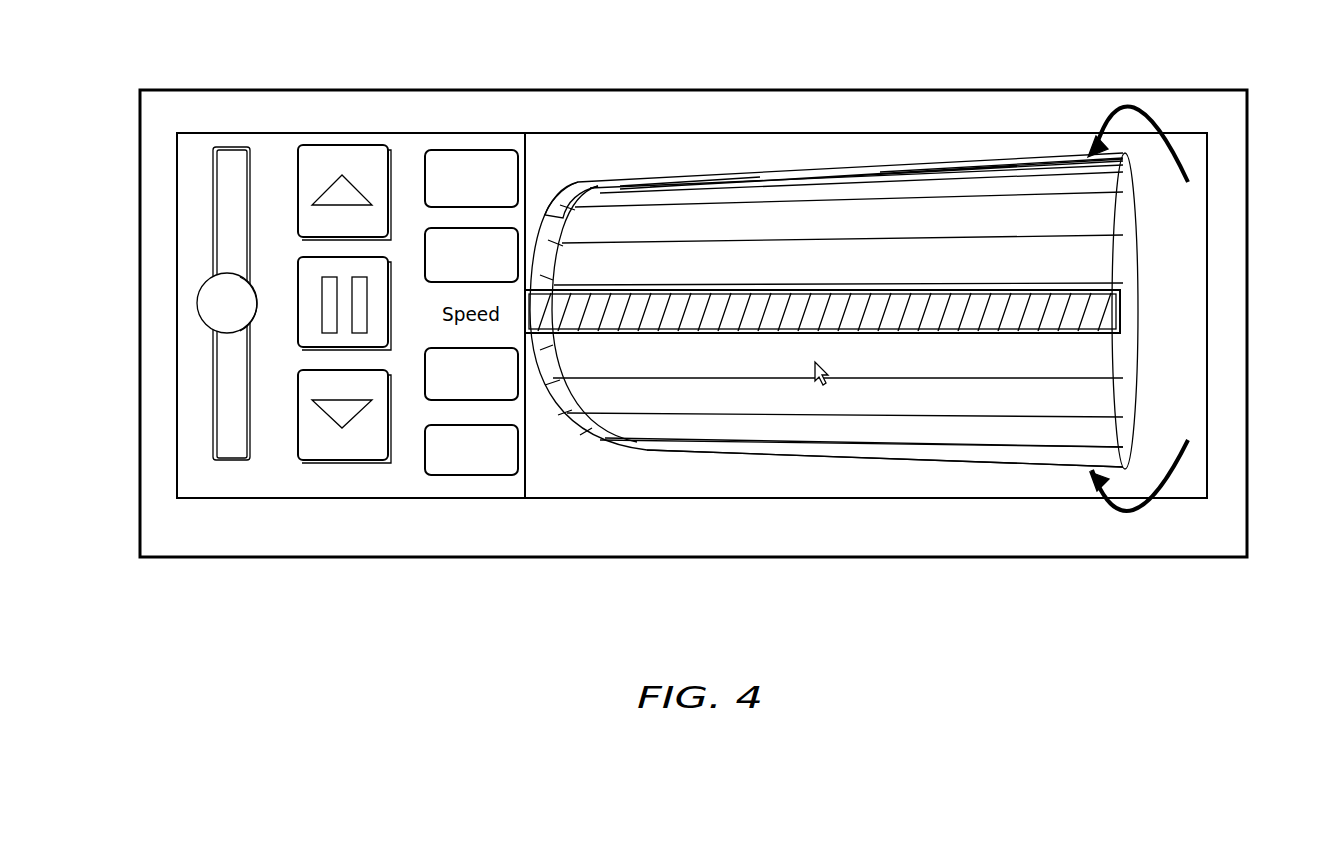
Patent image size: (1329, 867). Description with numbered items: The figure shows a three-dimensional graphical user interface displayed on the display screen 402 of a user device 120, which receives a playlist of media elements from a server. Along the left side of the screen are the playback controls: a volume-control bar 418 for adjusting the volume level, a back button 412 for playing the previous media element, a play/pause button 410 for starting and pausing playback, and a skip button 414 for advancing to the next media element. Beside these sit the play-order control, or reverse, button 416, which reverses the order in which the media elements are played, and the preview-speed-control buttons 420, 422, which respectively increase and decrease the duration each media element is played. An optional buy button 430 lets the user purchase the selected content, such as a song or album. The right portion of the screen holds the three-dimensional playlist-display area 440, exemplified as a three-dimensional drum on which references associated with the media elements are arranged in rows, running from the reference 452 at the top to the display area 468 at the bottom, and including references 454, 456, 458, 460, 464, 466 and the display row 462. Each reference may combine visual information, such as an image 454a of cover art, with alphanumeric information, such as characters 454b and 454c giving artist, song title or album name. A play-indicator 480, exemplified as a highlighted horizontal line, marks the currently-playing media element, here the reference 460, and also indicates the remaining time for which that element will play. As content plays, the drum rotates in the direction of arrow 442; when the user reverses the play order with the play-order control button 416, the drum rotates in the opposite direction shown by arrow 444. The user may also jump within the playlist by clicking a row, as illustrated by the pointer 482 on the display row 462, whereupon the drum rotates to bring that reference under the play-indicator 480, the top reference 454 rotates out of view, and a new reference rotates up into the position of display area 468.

The user device 120 is at (1062, 90).
The display screen 402 is at (882, 133).
The play/pause button 410 is at (305, 333).
The back button 412 is at (335, 158).
The skip button 414 is at (315, 462).
The play-order control button 416 is at (493, 150).
The volume-control bar 418 is at (222, 152).
The preview-speed-control button 420 is at (425, 252).
The preview-speed-control button 422 is at (423, 383).
The buy button 430 is at (487, 478).
The 3D playlist-display area 440 is at (777, 430).
The arrow 442 is at (1137, 513).
The arrow 444 is at (1160, 112).
The reference 452 is at (1123, 157).
The reference 454 is at (1123, 178).
The image 454a is at (605, 183).
The characters 454b is at (667, 186).
The characters 454c is at (935, 180).
The reference 456 is at (1123, 215).
The reference 458 is at (1123, 262).
The reference 460 is at (1123, 300).
The display row 462 is at (1123, 358).
The reference 464 is at (1123, 397).
The reference 466 is at (1123, 432).
The display area 468 is at (1123, 460).
The play-indicator 480 is at (785, 300).
The pointer 482 is at (822, 380).